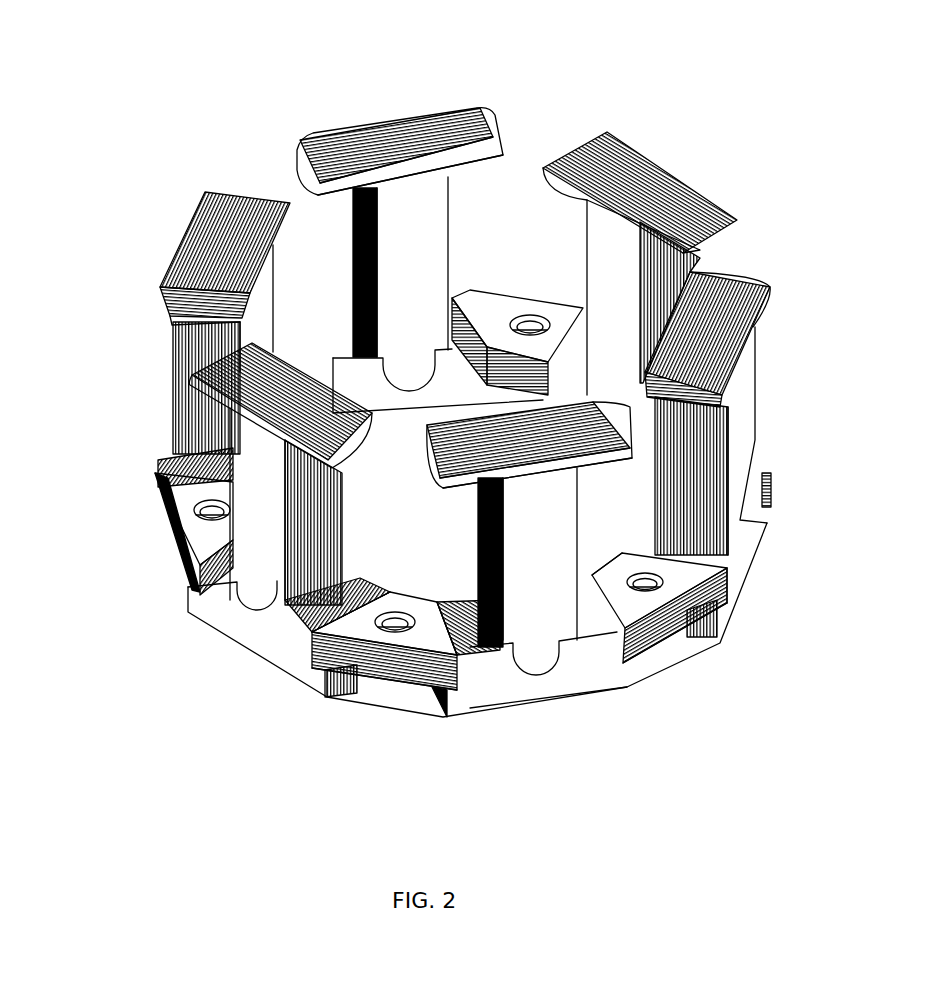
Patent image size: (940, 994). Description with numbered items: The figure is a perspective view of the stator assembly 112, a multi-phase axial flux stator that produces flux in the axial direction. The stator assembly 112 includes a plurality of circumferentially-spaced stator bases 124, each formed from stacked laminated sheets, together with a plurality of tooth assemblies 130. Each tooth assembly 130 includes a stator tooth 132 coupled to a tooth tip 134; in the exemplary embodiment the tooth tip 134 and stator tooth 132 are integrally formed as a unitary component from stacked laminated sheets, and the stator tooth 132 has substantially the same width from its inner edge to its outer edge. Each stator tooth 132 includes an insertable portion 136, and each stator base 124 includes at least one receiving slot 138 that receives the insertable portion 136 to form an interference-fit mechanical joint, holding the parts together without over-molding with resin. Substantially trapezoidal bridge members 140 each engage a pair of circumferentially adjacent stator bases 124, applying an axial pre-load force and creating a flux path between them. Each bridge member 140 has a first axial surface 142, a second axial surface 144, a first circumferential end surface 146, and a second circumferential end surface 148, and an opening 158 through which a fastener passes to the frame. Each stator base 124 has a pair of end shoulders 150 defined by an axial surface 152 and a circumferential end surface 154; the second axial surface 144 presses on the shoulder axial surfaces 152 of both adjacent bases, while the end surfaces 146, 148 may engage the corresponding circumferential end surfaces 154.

The stator assembly 112 is at (815, 73).
The stator base 124 is at (783, 540).
The tooth assembly 130 is at (575, 124).
The stator tooth 132 is at (430, 245).
The tooth tip 134 is at (470, 178).
The insertable portion 136 is at (553, 658).
The receiving slot 138 is at (547, 683).
The bridge member 140 is at (505, 305).
The first axial surface 142 is at (423, 593).
The second axial surface 144 is at (413, 687).
The first circumferential end surface 146 is at (377, 590).
The second circumferential end surface 148 is at (417, 600).
The end shoulder 150 is at (483, 690).
The axial surface 152 is at (460, 703).
The circumferential end surface 154 is at (485, 690).
The opening 158 is at (395, 595).